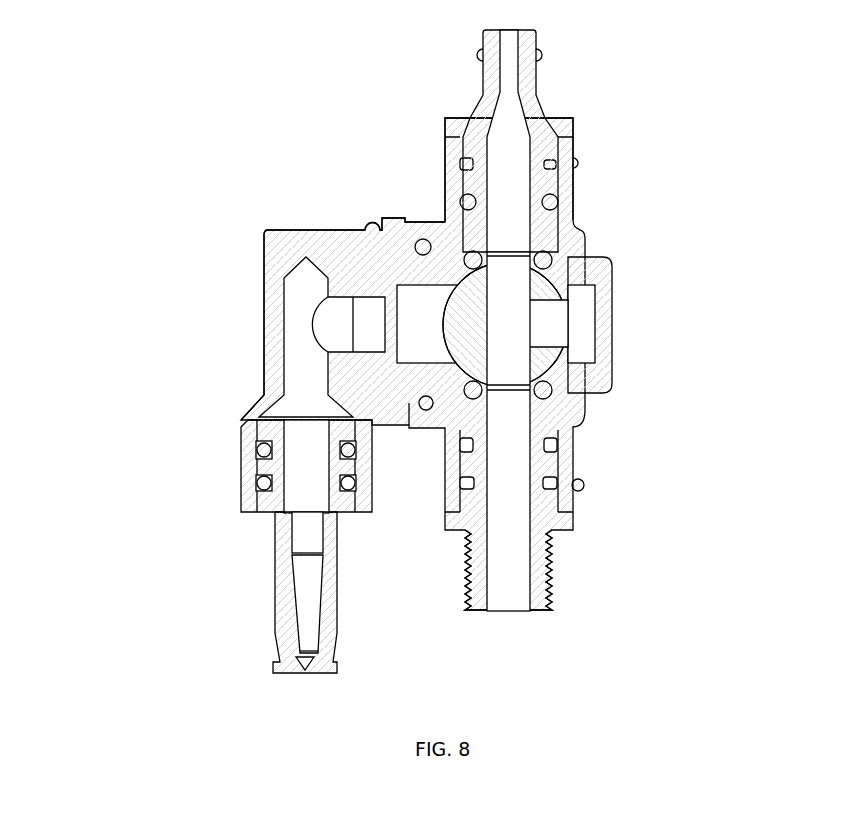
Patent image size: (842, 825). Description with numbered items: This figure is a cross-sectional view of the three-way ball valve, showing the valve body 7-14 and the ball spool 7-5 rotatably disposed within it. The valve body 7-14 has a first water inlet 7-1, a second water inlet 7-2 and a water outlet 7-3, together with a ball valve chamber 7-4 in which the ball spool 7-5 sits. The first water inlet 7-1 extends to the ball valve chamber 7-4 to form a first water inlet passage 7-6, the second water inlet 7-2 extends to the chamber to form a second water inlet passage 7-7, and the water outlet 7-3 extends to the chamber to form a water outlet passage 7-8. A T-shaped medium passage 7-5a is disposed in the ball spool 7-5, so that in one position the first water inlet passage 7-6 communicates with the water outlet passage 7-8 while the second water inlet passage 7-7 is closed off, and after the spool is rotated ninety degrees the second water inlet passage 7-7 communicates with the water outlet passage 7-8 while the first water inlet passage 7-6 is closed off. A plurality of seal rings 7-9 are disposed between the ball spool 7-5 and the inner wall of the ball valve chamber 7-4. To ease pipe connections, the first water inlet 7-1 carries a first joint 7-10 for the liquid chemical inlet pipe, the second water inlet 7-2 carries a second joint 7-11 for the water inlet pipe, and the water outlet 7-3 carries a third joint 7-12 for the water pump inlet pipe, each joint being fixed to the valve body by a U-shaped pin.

The first water inlet 7-1 is at (575, 463).
The second water inlet 7-2 is at (243, 462).
The water outlet 7-3 is at (444, 180).
The ball valve chamber 7-4 is at (564, 278).
The ball spool 7-5 is at (548, 368).
The T-shaped medium passage 7-5a is at (524, 321).
The first water inlet passage 7-6 is at (509, 465).
The second water inlet passage 7-7 is at (307, 367).
The water outlet passage 7-8 is at (513, 176).
The seal rings 7-9 is at (468, 256).
The first joint 7-10 is at (548, 535).
The second joint 7-11 is at (337, 580).
The third joint 7-12 is at (470, 117).
The valve body 7-14 is at (263, 267).